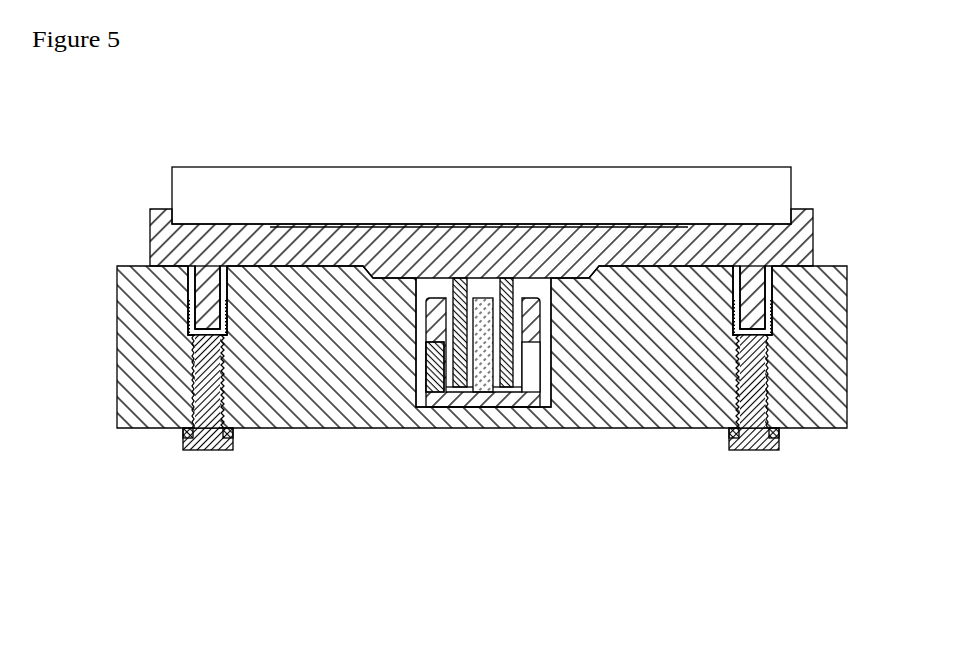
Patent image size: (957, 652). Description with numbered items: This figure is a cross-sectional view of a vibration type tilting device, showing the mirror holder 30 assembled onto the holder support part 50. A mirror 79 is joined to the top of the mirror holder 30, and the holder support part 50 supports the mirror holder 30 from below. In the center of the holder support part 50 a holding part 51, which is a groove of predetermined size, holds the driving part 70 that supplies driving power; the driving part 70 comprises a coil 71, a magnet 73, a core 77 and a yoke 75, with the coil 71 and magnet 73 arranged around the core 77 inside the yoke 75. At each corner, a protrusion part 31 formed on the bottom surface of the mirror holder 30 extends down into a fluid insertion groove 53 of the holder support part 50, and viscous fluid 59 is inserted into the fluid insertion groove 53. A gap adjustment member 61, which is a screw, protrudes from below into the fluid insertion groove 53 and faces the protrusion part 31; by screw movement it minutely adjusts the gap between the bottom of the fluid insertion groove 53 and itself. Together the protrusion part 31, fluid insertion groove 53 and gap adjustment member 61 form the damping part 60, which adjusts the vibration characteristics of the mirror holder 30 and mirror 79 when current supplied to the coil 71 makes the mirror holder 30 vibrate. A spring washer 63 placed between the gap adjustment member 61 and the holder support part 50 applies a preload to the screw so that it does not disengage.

The mirror holder 30 is at (163, 243).
The protrusion part 31 is at (193, 303).
The holder support part 50 is at (686, 407).
The holding part 51 is at (420, 407).
The fluid insertion groove 53 is at (770, 283).
The viscous fluid 59 is at (195, 325).
The damping part 60 is at (471, 434).
The gap adjustment member 61 is at (207, 451).
The spring washer 63 is at (183, 432).
The driving part 70 is at (451, 450).
The coil 71 is at (459, 388).
The magnet 73 is at (538, 368).
The yoke 75 is at (443, 305).
The core 77 is at (511, 393).
The mirror 79 is at (270, 167).